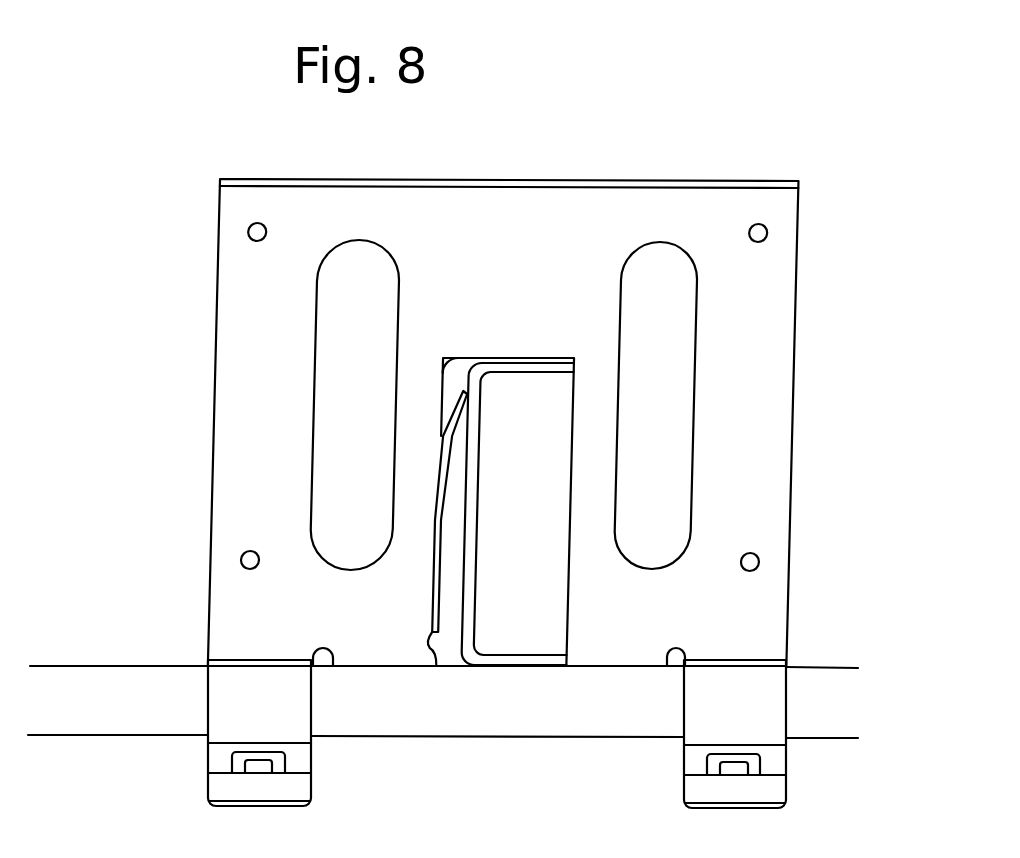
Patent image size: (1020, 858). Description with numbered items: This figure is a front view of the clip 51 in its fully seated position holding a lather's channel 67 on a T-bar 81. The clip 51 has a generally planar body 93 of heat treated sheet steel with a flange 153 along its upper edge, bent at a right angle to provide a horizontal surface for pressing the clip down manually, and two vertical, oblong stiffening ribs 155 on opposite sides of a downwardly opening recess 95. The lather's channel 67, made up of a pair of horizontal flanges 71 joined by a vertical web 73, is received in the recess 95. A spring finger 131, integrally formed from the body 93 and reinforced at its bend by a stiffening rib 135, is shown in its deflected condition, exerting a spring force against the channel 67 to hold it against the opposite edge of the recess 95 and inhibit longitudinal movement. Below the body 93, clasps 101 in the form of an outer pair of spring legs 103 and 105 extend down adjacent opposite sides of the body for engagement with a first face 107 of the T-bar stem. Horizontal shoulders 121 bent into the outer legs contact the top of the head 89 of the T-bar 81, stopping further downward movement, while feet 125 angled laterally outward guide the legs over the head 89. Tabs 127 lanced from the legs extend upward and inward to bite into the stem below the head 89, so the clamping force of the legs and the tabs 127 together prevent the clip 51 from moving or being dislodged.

The clip 51 is at (207, 293).
The body 93 is at (768, 437).
The flange 153 is at (677, 183).
The stiffening ribs 155 is at (335, 346).
The recess 95 is at (462, 358).
The horizontal flanges 71 is at (558, 370).
The vertical web 73 is at (470, 483).
The lather's channel 67 is at (479, 434).
The stiffening rib 135 is at (430, 572).
The spring finger 131 is at (432, 605).
The head 89 is at (145, 683).
The T-bar 81 is at (808, 668).
The first face 107 is at (524, 789).
The horizontal shoulders 121 is at (228, 658).
The spring leg 103 is at (215, 710).
The spring leg 105 is at (778, 712).
The feet 125 is at (215, 790).
The clasps 101 is at (324, 794).
The tabs 127 is at (257, 767).